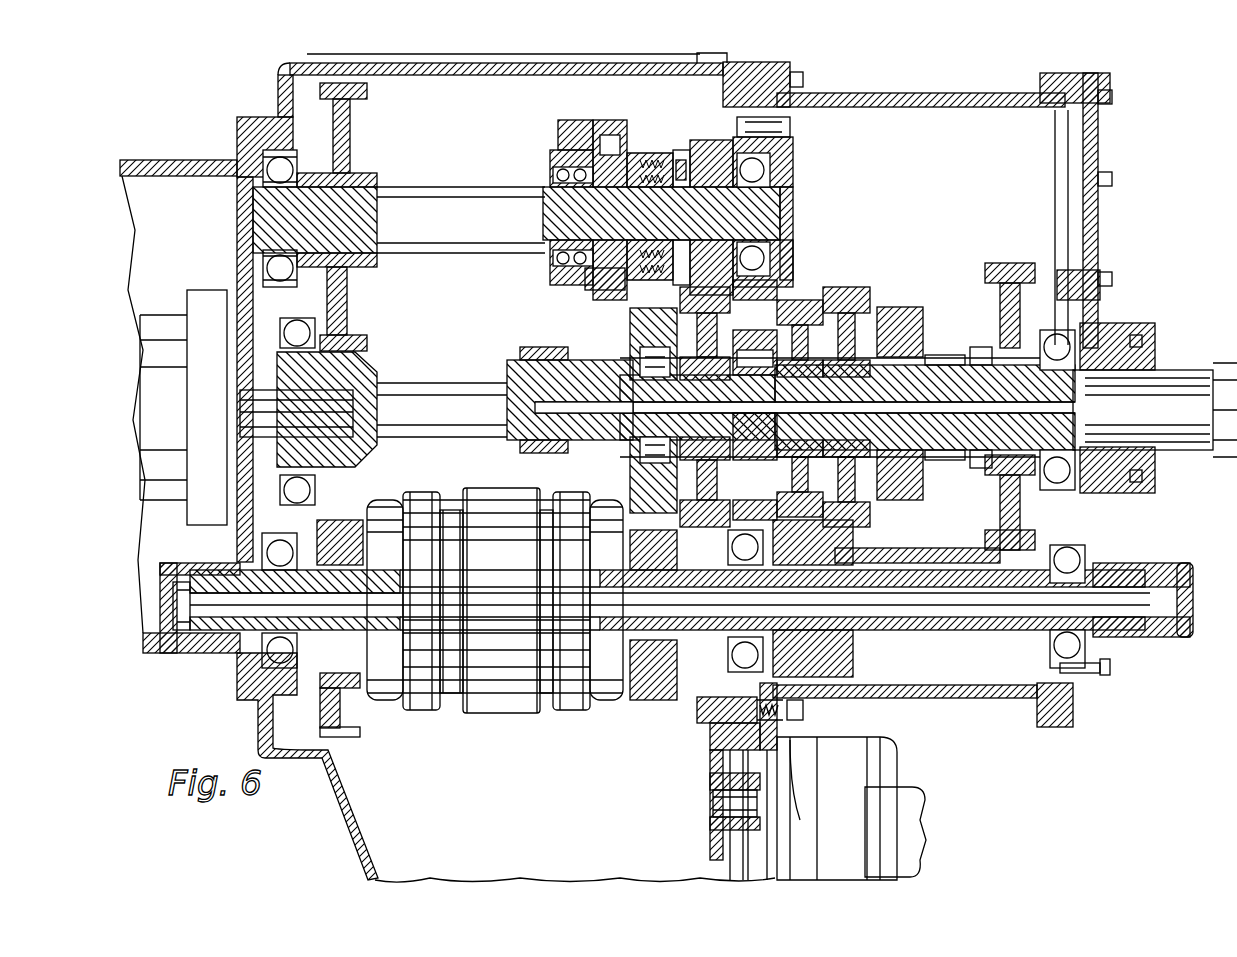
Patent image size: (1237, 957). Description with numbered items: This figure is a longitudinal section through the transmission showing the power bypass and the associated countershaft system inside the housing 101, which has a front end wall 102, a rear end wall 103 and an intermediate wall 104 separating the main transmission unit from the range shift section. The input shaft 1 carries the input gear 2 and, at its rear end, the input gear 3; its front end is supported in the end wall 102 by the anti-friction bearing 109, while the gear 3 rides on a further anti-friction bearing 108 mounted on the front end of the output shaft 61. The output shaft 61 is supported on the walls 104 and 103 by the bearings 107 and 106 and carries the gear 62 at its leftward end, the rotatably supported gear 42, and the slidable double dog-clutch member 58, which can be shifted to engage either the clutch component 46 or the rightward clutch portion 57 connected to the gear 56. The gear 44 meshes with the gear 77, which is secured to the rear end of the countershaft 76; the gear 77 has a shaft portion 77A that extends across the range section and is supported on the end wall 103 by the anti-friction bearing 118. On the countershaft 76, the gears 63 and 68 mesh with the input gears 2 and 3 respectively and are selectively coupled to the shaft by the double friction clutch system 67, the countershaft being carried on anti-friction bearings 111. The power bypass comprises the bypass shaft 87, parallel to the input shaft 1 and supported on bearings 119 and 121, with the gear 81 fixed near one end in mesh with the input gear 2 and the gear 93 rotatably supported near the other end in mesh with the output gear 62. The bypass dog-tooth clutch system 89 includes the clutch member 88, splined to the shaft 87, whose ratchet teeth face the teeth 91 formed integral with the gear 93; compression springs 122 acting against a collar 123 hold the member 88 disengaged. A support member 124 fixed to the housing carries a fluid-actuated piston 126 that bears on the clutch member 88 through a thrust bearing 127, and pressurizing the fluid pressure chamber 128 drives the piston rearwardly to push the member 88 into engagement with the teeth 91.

The input shaft 1 is at (447, 403).
The input gear 2 is at (362, 355).
The input gear 3 is at (640, 330).
The gear 42 is at (805, 297).
The gear 44 is at (852, 290).
The clutch component 46 is at (925, 463).
The gear 56 is at (1012, 265).
The rightward clutch portion 57 is at (990, 460).
The double dog-clutch member 58 is at (935, 355).
The output shaft 61 is at (1160, 385).
The gear 62 is at (700, 305).
The gear 63 is at (355, 720).
The double friction clutch system 67 is at (507, 718).
The gear 68 is at (655, 680).
The countershaft 76 is at (785, 640).
The gear 77 is at (870, 677).
The shaft portion 77A is at (935, 630).
The gear 81 is at (345, 100).
The power bypass shaft 87 is at (262, 197).
The clutch member 88 is at (652, 165).
The dog-tooth clutch system 89 is at (647, 100).
The ratchet teeth 91 is at (690, 150).
The gear 93 is at (712, 155).
The housing 101 is at (893, 96).
The end wall 102 is at (283, 95).
The end wall 103 is at (1098, 130).
The intermediate wall 104 is at (735, 62).
The anti-friction bearing 106 is at (1090, 335).
The anti-friction bearing 107 is at (780, 373).
The anti-friction bearing 108 is at (650, 452).
The anti-friction bearing 109 is at (292, 325).
The anti-friction bearings 111 is at (262, 655).
The anti-friction bearing 118 is at (1100, 660).
The antifriction bearing 119 is at (263, 172).
The antifriction bearing 121 is at (760, 170).
The compression springs 122 is at (592, 290).
The collar 123 is at (672, 145).
The support member 124 is at (558, 150).
The fluid-actuated piston 126 is at (610, 140).
The thrust bearing 127 is at (632, 155).
The fluid pressure chamber 128 is at (605, 150).